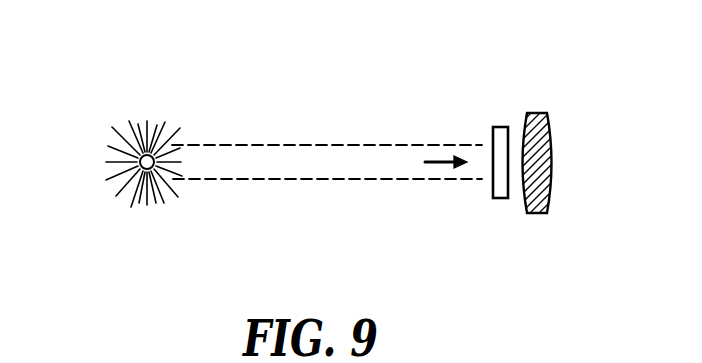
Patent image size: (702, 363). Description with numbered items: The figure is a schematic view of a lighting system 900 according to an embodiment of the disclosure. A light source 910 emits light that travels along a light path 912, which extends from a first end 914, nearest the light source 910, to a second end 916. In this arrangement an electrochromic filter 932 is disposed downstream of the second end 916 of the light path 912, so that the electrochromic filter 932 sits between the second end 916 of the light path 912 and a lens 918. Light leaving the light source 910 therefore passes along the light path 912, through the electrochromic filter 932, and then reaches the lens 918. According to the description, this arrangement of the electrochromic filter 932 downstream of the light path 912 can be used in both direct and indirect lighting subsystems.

The lighting system 900 is at (152, 99).
The light source 910 is at (138, 145).
The light path 912 is at (330, 167).
The first end of light path 914 is at (197, 167).
The second end of light path 916 is at (477, 162).
The electrochromic filter 932 is at (500, 198).
The lens 918 is at (535, 213).